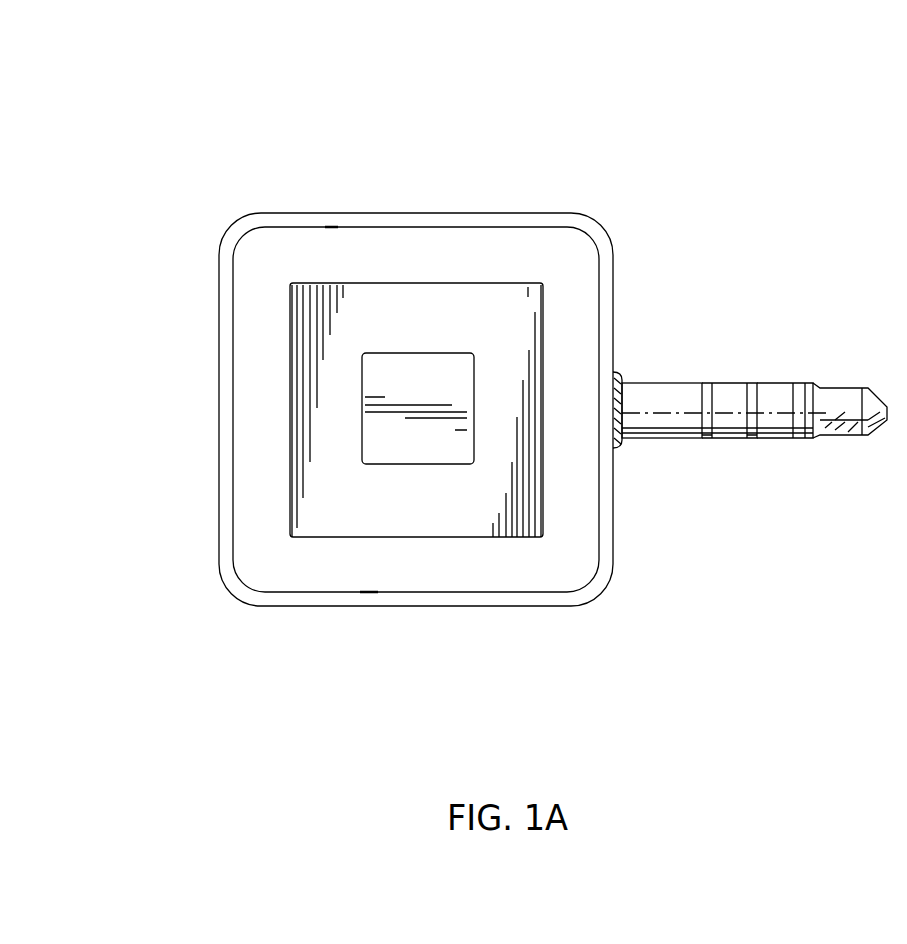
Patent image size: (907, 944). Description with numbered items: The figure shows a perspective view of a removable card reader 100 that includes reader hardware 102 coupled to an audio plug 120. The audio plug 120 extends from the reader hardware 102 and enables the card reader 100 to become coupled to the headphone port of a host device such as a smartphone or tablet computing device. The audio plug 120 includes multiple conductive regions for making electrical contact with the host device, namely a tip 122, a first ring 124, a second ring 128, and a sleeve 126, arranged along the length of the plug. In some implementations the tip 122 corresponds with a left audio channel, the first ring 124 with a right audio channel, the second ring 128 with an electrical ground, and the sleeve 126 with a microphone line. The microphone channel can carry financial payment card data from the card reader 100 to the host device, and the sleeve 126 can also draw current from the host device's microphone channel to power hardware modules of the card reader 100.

The card reader 100 is at (787, 173).
The reader hardware 102 is at (228, 585).
The audio plug 120 is at (886, 313).
The tip 122 is at (845, 437).
The first ring 124 is at (773, 388).
The sleeve 126 is at (645, 437).
The second ring 128 is at (730, 437).